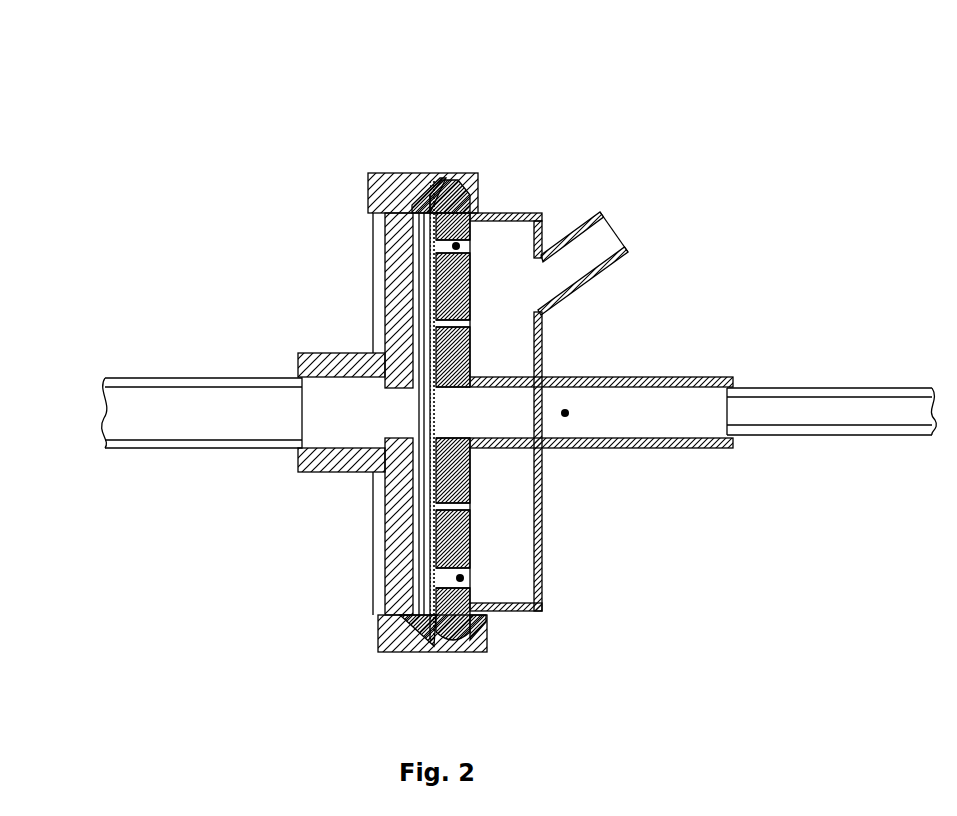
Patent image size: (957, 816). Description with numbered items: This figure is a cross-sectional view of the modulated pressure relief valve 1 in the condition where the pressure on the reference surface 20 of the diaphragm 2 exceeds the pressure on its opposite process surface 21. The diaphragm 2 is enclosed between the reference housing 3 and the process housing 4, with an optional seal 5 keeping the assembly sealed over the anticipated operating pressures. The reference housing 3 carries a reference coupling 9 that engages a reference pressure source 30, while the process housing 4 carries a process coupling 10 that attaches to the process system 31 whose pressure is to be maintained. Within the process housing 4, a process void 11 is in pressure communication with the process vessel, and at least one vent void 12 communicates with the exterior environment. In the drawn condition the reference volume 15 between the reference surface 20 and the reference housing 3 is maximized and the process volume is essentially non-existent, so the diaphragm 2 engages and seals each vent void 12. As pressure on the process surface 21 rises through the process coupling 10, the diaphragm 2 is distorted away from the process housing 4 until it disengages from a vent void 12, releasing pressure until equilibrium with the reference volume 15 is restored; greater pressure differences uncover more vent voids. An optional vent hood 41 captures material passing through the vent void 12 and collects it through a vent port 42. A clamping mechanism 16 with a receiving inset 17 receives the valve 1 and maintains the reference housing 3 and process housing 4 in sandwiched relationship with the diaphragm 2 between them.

The modulated pressure relief valve 1 is at (540, 374).
The diaphragm 2 is at (471, 354).
The reference housing 3 is at (334, 397).
The process housing 4 is at (570, 412).
The seal 5 is at (390, 118).
The reference coupling 9 is at (302, 455).
The process coupling 10 is at (665, 372).
The process void 11 is at (617, 448).
The vent void 12 is at (544, 365).
The reference volume 15 is at (344, 414).
The clamping mechanism 16 is at (415, 410).
The receiving inset 17 is at (384, 670).
The reference surface 20 is at (349, 410).
The process surface 21 is at (540, 366).
The reference pressure source 30 is at (187, 450).
The process system 31 is at (831, 446).
The vent hood 41 is at (595, 387).
The vent port 42 is at (636, 263).